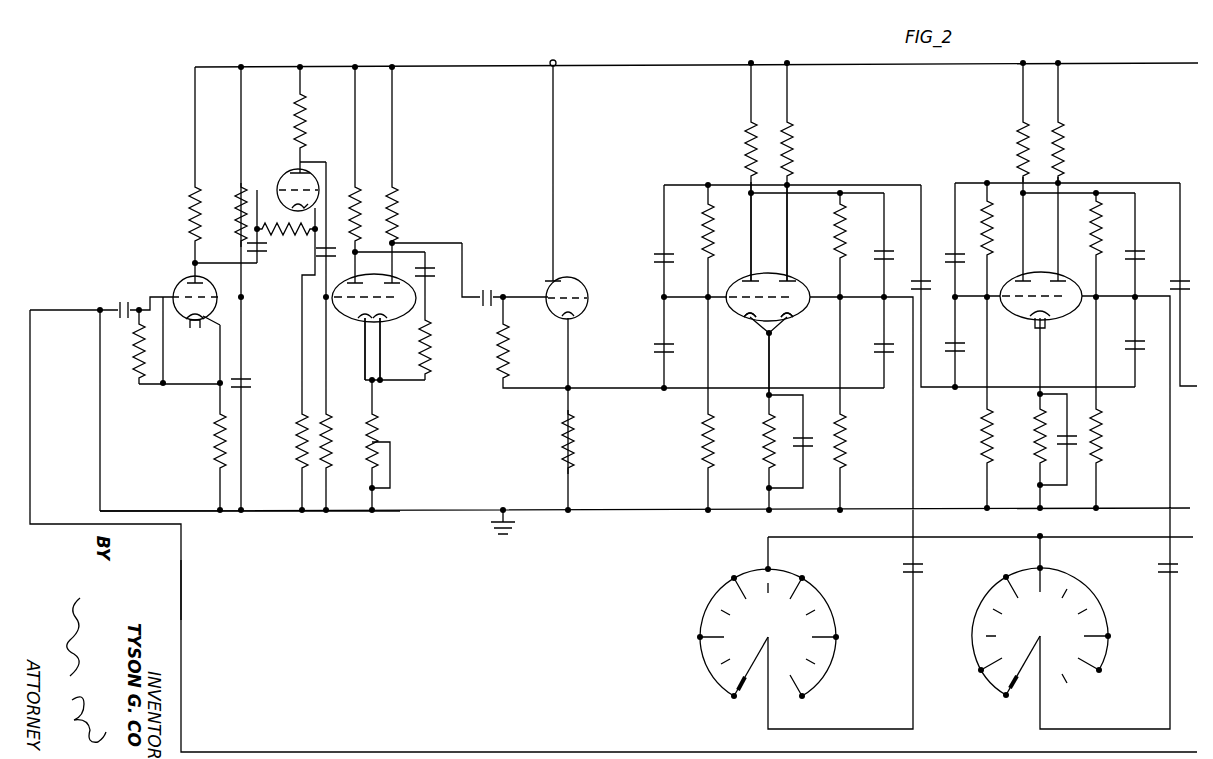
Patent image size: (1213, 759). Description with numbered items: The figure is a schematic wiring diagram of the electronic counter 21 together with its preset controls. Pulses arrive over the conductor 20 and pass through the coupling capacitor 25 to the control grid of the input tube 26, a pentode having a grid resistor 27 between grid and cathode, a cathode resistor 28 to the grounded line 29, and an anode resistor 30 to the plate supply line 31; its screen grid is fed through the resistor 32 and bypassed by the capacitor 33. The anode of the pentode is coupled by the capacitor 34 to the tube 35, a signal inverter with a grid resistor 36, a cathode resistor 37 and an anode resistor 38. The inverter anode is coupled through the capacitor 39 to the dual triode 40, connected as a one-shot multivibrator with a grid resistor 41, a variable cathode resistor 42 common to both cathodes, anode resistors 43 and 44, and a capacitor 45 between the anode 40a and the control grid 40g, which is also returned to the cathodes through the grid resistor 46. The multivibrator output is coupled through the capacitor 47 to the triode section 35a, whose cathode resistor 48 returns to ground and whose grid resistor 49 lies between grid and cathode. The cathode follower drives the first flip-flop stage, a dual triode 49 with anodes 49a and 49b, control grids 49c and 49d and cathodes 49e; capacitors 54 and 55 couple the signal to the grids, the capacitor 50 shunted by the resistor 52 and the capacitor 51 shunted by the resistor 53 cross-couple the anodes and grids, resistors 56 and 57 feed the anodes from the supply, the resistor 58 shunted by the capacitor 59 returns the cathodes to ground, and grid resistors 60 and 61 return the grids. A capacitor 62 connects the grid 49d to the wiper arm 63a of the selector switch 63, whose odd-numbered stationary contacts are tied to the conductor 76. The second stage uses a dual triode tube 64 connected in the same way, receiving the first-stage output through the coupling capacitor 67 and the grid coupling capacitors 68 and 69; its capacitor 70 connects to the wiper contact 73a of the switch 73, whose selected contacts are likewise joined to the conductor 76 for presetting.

The conductor 20 is at (182, 592).
The counter 21 is at (447, 562).
The coupling capacitor 25 is at (117, 292).
The input tube 26 is at (180, 284).
The grid resistor 27 is at (137, 352).
The cathode resistor 28 is at (212, 440).
The grounded line 29 is at (260, 512).
The anode resistor 30 is at (188, 212).
The plate supply line 31 is at (706, 63).
The resistor 32 is at (236, 214).
The capacitor 33 is at (252, 383).
The capacitor 34 is at (266, 250).
The tube 35 is at (288, 170).
The triode section 35a is at (570, 276).
The grid resistor 36 is at (284, 229).
The cathode resistor 37 is at (296, 442).
The anode resistor 38 is at (308, 130).
The capacitor 39 is at (328, 251).
The dual triode 40 is at (361, 332).
The anode 40a is at (403, 292).
The control grid 40g is at (384, 332).
The grid resistor 41 is at (331, 418).
The variable cathode resistor 42 is at (380, 416).
The anode resistor 43 is at (354, 190).
The anode resistor 44 is at (391, 190).
The capacitor 45 is at (430, 273).
The grid resistor 46 is at (428, 364).
The capacitor 47 is at (487, 292).
The cathode resistor 48 is at (557, 452).
The dual triode 49 is at (499, 344).
The anode 49a is at (726, 276).
The anode 49b is at (791, 278).
The control grid 49c is at (748, 316).
The control grid 49d is at (787, 315).
The cathodes 49e is at (774, 334).
The capacitor 50 is at (653, 259).
The capacitor 51 is at (878, 254).
The resistor 52 is at (700, 214).
The resistor 53 is at (832, 214).
The capacitor 54 is at (654, 348).
The capacitor 55 is at (878, 348).
The resistor 56 is at (744, 140).
The resistor 57 is at (794, 134).
The resistor 58 is at (762, 438).
The capacitor 59 is at (798, 443).
The grid resistor 60 is at (700, 420).
The grid resistor 61 is at (845, 434).
The capacitor 62 is at (902, 568).
The multiple contact selector switch 63 is at (767, 631).
The wiper arm 63a is at (758, 646).
The dual triode tube 64 is at (1030, 318).
The coupling capacitor 67 is at (929, 278).
The grid coupling capacitor 68 is at (948, 348).
The grid coupling capacitor 69 is at (1137, 348).
The capacitor 70 is at (1158, 568).
The multi contact selector switch 73 is at (1039, 630).
The wiper contact 73a is at (1027, 645).
The conductor 76 is at (936, 536).